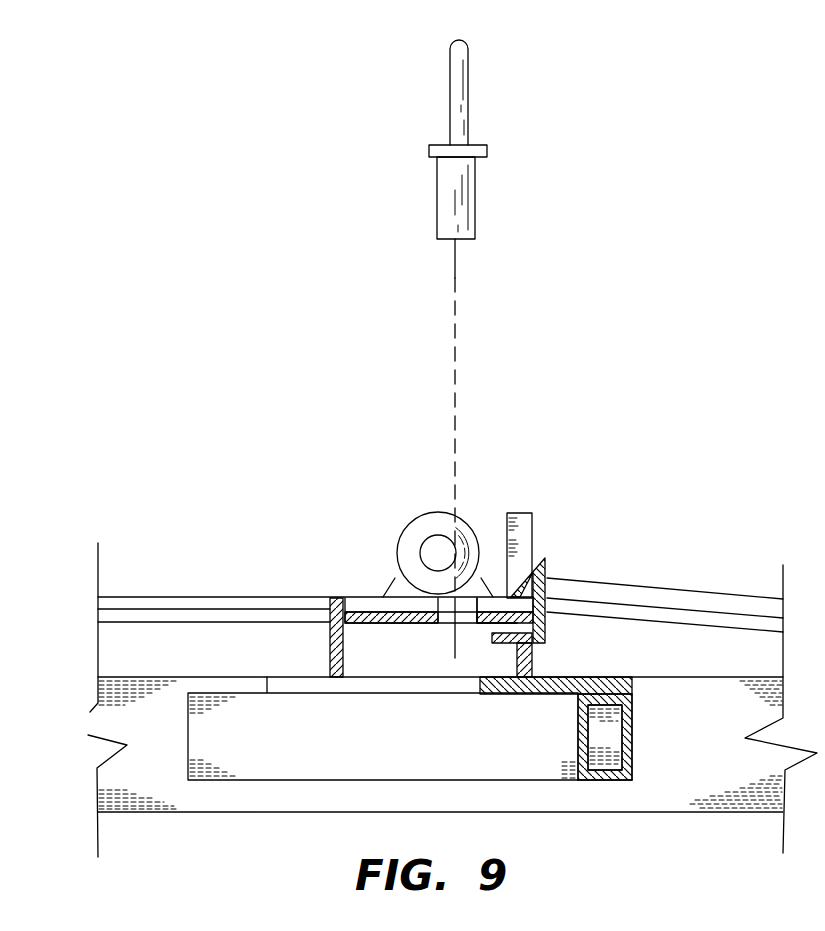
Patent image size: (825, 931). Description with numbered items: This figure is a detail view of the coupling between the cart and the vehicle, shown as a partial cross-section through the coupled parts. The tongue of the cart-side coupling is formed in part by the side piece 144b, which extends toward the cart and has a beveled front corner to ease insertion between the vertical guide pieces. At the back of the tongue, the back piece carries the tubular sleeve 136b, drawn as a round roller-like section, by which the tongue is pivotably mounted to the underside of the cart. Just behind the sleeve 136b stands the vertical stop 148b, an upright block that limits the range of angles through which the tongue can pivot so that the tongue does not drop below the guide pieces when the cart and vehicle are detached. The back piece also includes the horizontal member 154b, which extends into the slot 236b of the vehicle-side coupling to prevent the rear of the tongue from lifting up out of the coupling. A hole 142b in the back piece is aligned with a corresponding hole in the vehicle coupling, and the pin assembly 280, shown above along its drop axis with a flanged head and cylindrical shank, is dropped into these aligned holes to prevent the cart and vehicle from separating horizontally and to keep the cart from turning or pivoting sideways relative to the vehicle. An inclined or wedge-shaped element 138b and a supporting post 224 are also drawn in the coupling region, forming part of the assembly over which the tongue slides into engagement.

The pin assembly 280 is at (487, 152).
The side piece 144b is at (300, 596).
The tubular sleeve 136b is at (398, 550).
The vertical stop 148b is at (532, 513).
The wedge plate 138b is at (547, 560).
The hole 142b is at (448, 624).
The horizontal member 154b is at (490, 625).
The post 224 is at (330, 648).
The slot 236b is at (547, 645).